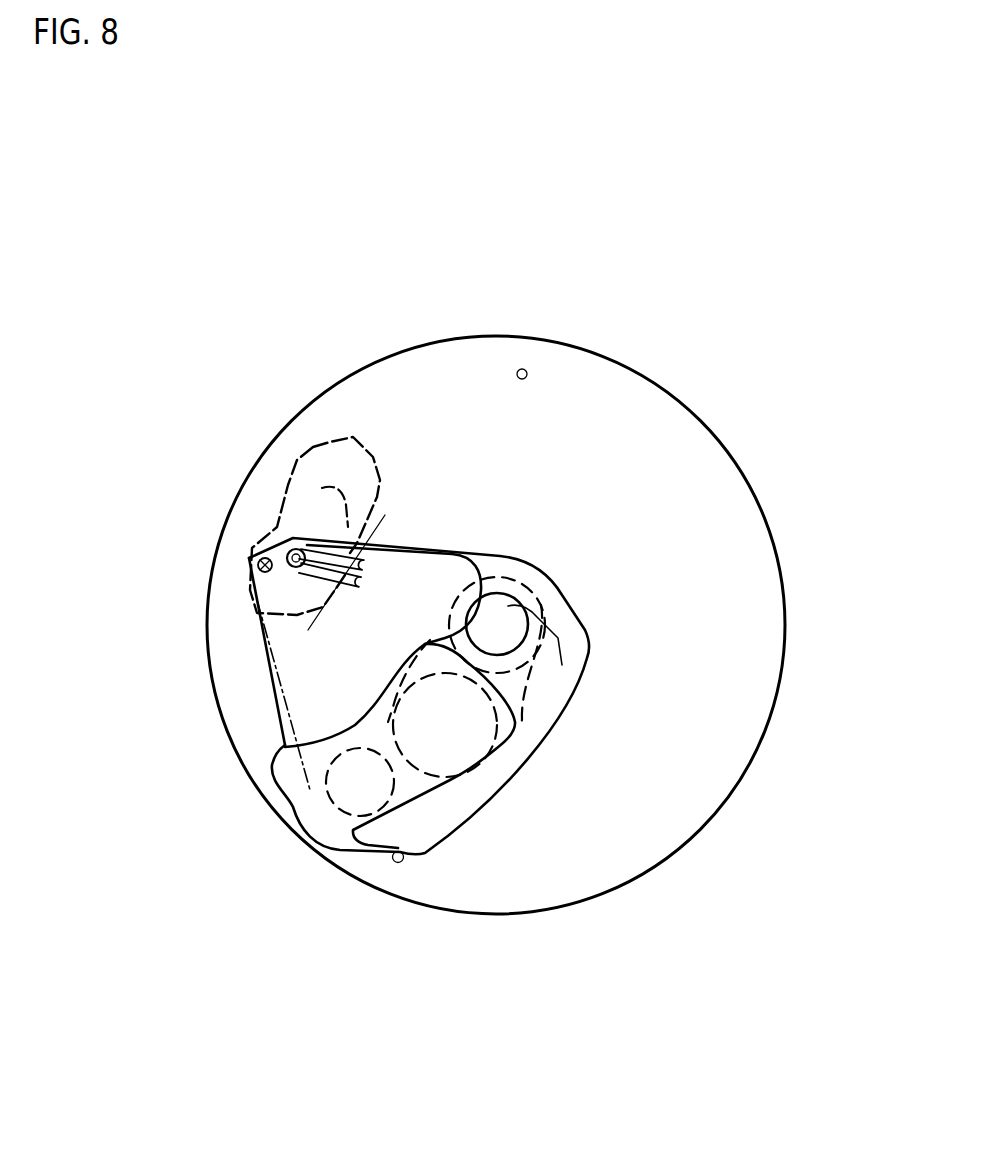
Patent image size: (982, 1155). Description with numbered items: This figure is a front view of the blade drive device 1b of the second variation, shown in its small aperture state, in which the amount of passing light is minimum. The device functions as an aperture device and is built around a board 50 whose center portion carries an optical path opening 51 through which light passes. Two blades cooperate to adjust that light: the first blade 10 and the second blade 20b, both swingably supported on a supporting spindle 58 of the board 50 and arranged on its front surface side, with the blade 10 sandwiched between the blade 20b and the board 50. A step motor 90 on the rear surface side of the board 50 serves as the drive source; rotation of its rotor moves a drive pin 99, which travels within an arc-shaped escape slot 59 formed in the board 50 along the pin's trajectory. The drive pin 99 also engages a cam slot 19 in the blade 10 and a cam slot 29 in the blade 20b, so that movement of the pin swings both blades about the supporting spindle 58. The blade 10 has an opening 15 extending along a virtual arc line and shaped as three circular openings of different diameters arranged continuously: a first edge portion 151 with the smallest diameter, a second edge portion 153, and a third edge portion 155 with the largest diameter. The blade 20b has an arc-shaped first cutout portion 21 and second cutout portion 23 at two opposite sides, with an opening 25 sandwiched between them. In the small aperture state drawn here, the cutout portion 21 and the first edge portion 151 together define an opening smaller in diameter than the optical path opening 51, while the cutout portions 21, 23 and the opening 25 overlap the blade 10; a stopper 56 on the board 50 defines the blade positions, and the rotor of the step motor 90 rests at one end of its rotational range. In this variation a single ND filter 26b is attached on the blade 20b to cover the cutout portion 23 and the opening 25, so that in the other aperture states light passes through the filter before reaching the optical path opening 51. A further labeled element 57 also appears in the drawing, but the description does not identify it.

The blade drive device 1b is at (282, 252).
The blade 10 is at (582, 672).
The opening 15 is at (523, 705).
The first edge portion 151 is at (508, 607).
The third edge portion 155 is at (520, 727).
The cam slot 19 is at (367, 547).
The blade 20b is at (268, 688).
The cutout portion 21 is at (498, 652).
The cutout portion 23 is at (315, 787).
The opening 25 is at (443, 730).
The ND filter 26b is at (342, 840).
The cam slot 29 is at (275, 634).
The board 50 is at (737, 457).
The optical path opening 51 is at (517, 575).
The stopper 56 is at (394, 862).
The pin 57 is at (524, 368).
The supporting spindle 58 is at (252, 560).
The escape slot 59 is at (349, 540).
The step motor 90 is at (315, 450).
The drive pin 99 is at (291, 551).
The second edge portion 153 is at (383, 772).